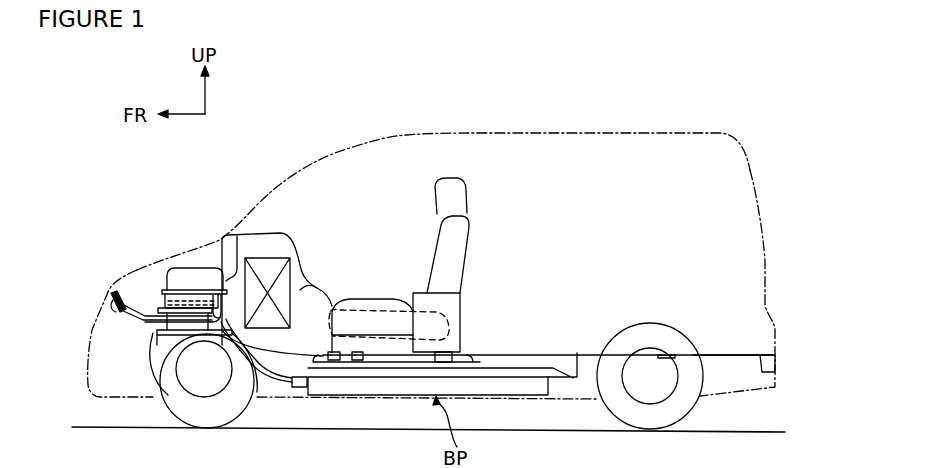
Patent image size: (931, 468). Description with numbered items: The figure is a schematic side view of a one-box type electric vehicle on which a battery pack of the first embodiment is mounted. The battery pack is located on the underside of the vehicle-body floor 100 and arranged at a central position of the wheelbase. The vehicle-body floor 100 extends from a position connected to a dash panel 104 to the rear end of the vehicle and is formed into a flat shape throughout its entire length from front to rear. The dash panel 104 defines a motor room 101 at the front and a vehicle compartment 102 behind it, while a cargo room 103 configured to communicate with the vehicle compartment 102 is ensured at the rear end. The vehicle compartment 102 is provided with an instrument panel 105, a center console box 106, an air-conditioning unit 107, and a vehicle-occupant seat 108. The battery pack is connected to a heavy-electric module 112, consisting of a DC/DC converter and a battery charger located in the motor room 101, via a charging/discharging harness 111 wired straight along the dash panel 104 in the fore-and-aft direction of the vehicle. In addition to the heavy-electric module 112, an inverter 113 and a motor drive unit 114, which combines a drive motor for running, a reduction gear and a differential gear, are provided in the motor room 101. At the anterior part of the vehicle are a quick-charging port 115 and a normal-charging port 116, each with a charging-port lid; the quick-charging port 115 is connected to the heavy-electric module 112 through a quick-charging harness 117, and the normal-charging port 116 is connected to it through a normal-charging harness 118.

The vehicle-body floor 100 is at (541, 353).
The motor room 101 is at (140, 391).
The vehicle compartment 102 is at (402, 212).
The cargo room 103 is at (647, 214).
The dash panel 104 is at (257, 280).
The instrument panel 105 is at (288, 235).
The center console box 106 is at (370, 324).
The air-conditioning unit 107 is at (299, 294).
The vehicle-occupant seat 108 is at (471, 238).
The charging/discharging harness 111 is at (255, 382).
The heavy-electric module 112 is at (182, 268).
The inverter 113 is at (193, 303).
The motor drive unit 114 is at (170, 379).
The quick-charging port 115 is at (116, 297).
The normal-charging port 116 is at (117, 293).
The quick-charging harness 117 is at (138, 296).
The normal-charging harness 118 is at (138, 316).